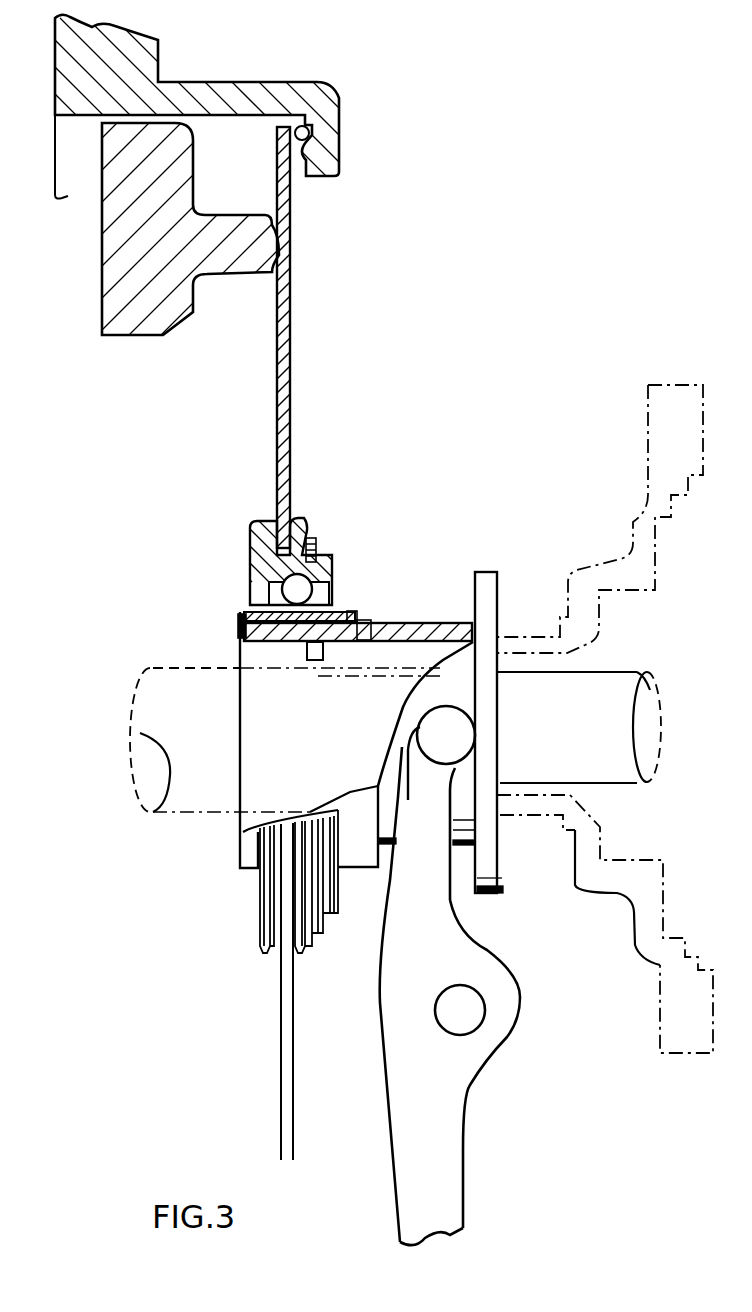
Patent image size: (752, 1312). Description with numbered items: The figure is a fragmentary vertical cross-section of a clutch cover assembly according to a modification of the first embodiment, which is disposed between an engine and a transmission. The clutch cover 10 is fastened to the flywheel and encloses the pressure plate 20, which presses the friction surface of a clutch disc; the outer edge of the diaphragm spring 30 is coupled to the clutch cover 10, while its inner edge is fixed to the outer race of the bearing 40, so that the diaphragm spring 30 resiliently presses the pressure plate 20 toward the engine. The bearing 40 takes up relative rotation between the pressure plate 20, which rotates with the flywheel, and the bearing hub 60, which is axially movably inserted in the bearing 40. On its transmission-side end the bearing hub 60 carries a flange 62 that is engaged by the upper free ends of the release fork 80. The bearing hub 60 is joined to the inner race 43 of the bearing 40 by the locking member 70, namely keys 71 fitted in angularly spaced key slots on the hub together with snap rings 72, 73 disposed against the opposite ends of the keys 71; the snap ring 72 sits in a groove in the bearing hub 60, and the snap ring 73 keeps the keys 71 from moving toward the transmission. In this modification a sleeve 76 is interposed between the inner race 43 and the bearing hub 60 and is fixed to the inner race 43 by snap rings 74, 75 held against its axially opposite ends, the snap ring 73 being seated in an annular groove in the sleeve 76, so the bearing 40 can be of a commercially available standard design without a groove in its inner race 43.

The clutch cover 10 is at (262, 97).
The pressure plate 20 is at (143, 323).
The diaphragm spring 30 is at (287, 440).
The bearing 40 is at (271, 518).
The inner race 43 is at (238, 580).
The bearing hub 60 is at (383, 850).
The flange 62 is at (488, 573).
The locking member 70 is at (320, 648).
The keys 71 is at (283, 643).
The snap ring 72 is at (242, 643).
The snap ring 73 is at (364, 612).
The snap ring 74 is at (255, 608).
The snap ring 75 is at (345, 607).
The sleeve 76 is at (256, 613).
The release fork 80 is at (487, 1043).